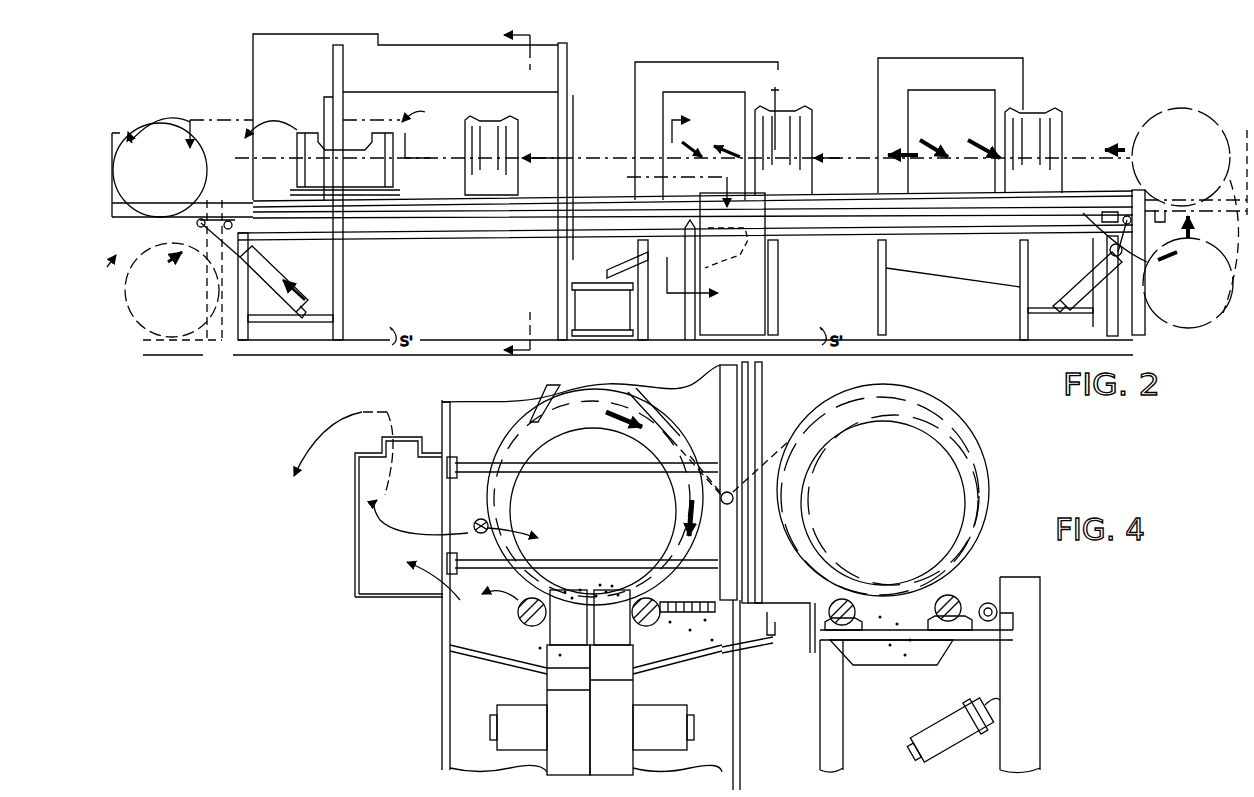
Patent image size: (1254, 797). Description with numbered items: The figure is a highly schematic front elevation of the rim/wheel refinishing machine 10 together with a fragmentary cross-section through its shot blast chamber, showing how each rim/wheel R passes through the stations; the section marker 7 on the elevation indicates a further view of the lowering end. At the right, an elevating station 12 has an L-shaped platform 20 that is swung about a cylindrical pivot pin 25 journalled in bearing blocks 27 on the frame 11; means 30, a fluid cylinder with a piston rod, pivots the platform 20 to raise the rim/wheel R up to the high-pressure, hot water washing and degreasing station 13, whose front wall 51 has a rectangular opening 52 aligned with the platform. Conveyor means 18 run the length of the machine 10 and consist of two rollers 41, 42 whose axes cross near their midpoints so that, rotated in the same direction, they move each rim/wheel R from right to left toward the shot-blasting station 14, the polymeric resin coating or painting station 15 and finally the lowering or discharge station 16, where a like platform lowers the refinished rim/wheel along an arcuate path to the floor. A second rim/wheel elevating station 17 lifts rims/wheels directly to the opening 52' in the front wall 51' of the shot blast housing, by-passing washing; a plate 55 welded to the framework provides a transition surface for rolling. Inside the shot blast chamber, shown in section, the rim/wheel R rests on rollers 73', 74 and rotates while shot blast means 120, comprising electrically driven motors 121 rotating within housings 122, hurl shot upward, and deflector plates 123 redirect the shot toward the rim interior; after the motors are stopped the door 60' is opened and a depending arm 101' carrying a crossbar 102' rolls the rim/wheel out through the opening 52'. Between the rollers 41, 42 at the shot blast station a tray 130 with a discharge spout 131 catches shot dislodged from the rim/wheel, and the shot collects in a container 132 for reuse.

In FIG. 2, the refinished rim exit station 7 is at (161, 145).
In FIG. 2, the machine 10 is at (1104, 57).
In FIG. 4, the machine 10 is at (335, 664).
In FIG. 2, the frame 11 is at (343, 303).
In FIG. 4, the frame 11 is at (440, 722).
In FIG. 2, the elevating station 12 is at (1197, 180).
In FIG. 2, the high-pressure, hot water washing and degreasing station 13 is at (1036, 65).
In FIG. 2, the shot-blasting station 14 is at (781, 61).
In FIG. 4, the shot-blasting station 14 is at (462, 388).
In FIG. 2, the polymeric resin coating or painting station 15 is at (576, 68).
In FIG. 2, the lowering or discharge station 16 is at (105, 266).
In FIG. 2, the second rim/wheel elevating station 17 is at (785, 286).
In FIG. 2, the conveyor means 18 is at (1086, 157).
In FIG. 4, the conveyor means 18 is at (893, 573).
In FIG. 2, the L-shaped platform 20 is at (141, 216).
In FIG. 4, the cylindrical pivot pin 25 is at (971, 675).
In FIG. 4, the bearing blocks 27 is at (1013, 621).
In FIG. 2, the means for pivoting platform 30 is at (1072, 276).
In FIG. 2, the roller 41 is at (268, 200).
In FIG. 4, the roller 41 is at (850, 598).
In FIG. 2, the roller 42 is at (285, 212).
In FIG. 4, the roller 42 is at (952, 598).
In FIG. 2, the front wall 51 is at (1013, 85).
In FIG. 2, the front wall 51' is at (790, 114).
In FIG. 2, the rectangular opening 52 is at (930, 102).
In FIG. 2, the opening 52' is at (726, 109).
In FIG. 4, the opening 52' is at (704, 584).
In FIG. 4, the plate 55 is at (796, 612).
In FIG. 4, the door 60' is at (621, 470).
In FIG. 4, the roller 73' is at (523, 620).
In FIG. 4, the roller 74 is at (640, 628).
In FIG. 4, the depending arm 101' is at (614, 430).
In FIG. 4, the crossbar 102' is at (624, 480).
In FIG. 4, the shot blast means 120 is at (460, 624).
In FIG. 4, the electrical driven motors 121 is at (507, 712).
In FIG. 4, the housings 122 is at (628, 743).
In FIG. 4, the deflector plates 123 is at (627, 630).
In FIG. 2, the reservoir or tray 130 is at (696, 256).
In FIG. 4, the reservoir or tray 130 is at (905, 667).
In FIG. 2, the discharge spout 131 is at (625, 272).
In FIG. 2, the container 132 is at (620, 321).
In FIG. 2, the rim/wheel R is at (1230, 340).
In FIG. 4, the rim/wheel R is at (598, 406).